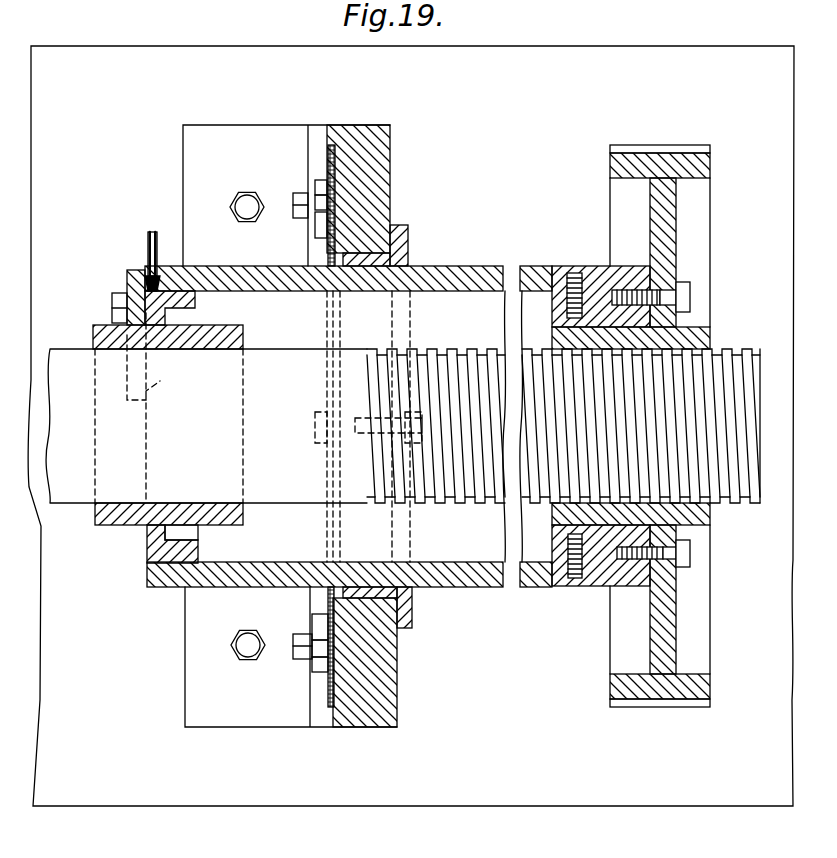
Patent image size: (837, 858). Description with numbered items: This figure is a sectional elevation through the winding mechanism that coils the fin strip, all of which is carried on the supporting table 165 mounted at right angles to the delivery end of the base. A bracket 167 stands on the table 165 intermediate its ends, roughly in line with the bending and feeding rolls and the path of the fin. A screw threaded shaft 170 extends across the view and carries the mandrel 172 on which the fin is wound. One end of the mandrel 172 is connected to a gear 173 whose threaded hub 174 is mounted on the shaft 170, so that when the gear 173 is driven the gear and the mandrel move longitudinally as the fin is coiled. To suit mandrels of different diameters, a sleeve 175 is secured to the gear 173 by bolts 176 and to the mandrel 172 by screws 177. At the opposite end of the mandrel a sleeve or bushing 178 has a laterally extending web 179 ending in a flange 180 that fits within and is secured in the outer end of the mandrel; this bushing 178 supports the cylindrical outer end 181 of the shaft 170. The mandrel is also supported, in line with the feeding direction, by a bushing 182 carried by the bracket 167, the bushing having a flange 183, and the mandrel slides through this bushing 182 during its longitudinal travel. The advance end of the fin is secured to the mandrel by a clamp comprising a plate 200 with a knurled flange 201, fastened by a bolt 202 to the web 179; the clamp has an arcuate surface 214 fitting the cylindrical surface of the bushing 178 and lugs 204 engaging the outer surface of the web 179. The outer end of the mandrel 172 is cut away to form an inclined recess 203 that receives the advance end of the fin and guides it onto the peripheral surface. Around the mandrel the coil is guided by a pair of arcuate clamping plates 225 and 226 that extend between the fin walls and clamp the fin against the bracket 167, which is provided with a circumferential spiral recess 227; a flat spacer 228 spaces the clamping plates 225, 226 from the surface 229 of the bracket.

The supporting table 165 is at (677, 795).
The bracket 167 is at (380, 708).
The screw threaded shaft 170 is at (477, 337).
The mandrel 172 is at (482, 266).
The gear 173 is at (698, 167).
The threaded hub 174 is at (710, 337).
The sleeve 175 is at (602, 270).
The bolts 176 is at (690, 292).
The screws 177 is at (572, 270).
The sleeve or bushing 178 is at (232, 326).
The web 179 is at (150, 535).
The flange 180 is at (188, 552).
The cylindrical outer end 181 is at (270, 348).
The bushing 182 is at (367, 255).
The flange 183 is at (402, 233).
The plate 200 is at (127, 283).
The knurled flange 201 is at (140, 268).
The bolt 202 is at (112, 305).
The inclined recess 203 is at (152, 287).
The lugs 204 is at (165, 378).
The arcuate surface 214 is at (131, 335).
The clamping plate 225 is at (328, 158).
The clamping plate 226 is at (327, 658).
The circumferential spiral recess 227 is at (340, 150).
The flat spacer 228 is at (335, 172).
The surface 229 is at (330, 252).